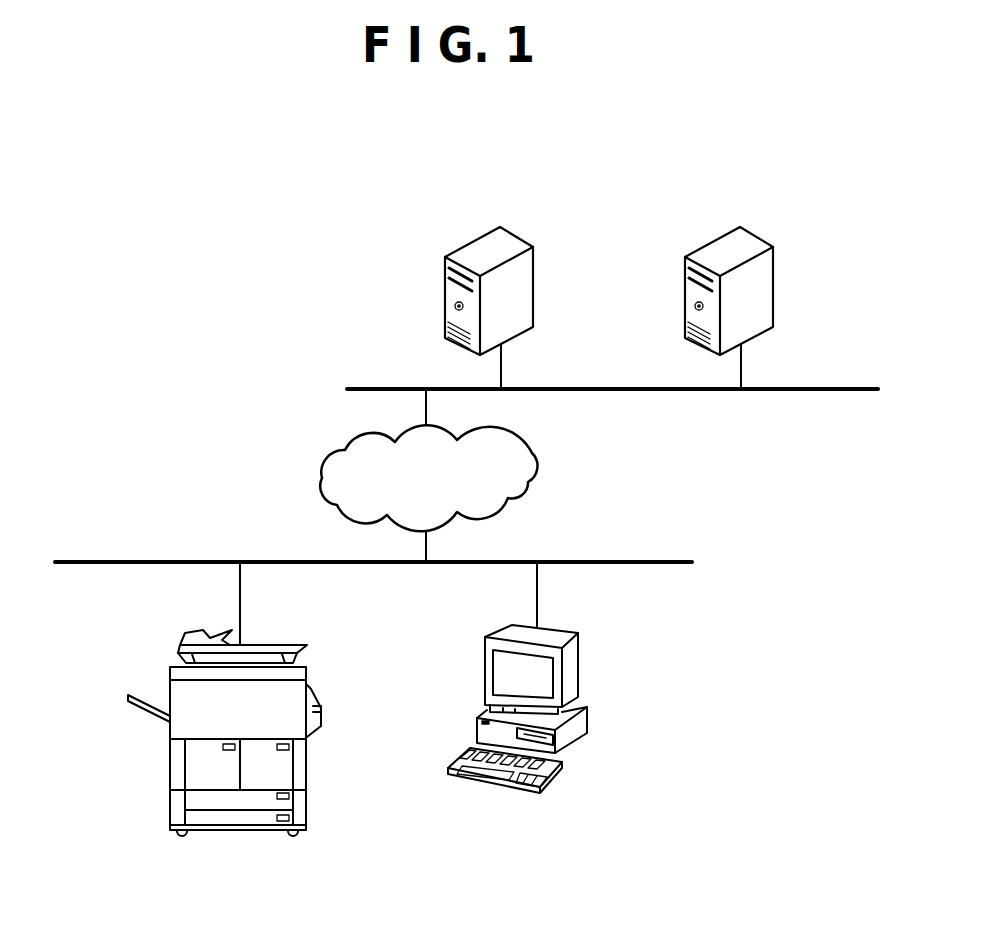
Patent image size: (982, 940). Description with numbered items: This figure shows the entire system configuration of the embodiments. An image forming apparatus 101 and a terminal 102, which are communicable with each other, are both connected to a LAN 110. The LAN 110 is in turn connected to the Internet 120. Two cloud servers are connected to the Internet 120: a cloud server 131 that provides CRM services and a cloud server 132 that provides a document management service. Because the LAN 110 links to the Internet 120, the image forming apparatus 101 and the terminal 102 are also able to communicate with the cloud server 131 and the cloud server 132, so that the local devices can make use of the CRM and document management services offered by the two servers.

The image forming apparatus 101 is at (293, 643).
The terminal 102 is at (567, 630).
The LAN 110 is at (92, 560).
The Internet 120 is at (527, 446).
The cloud server 131 is at (521, 233).
The cloud server 132 is at (761, 233).